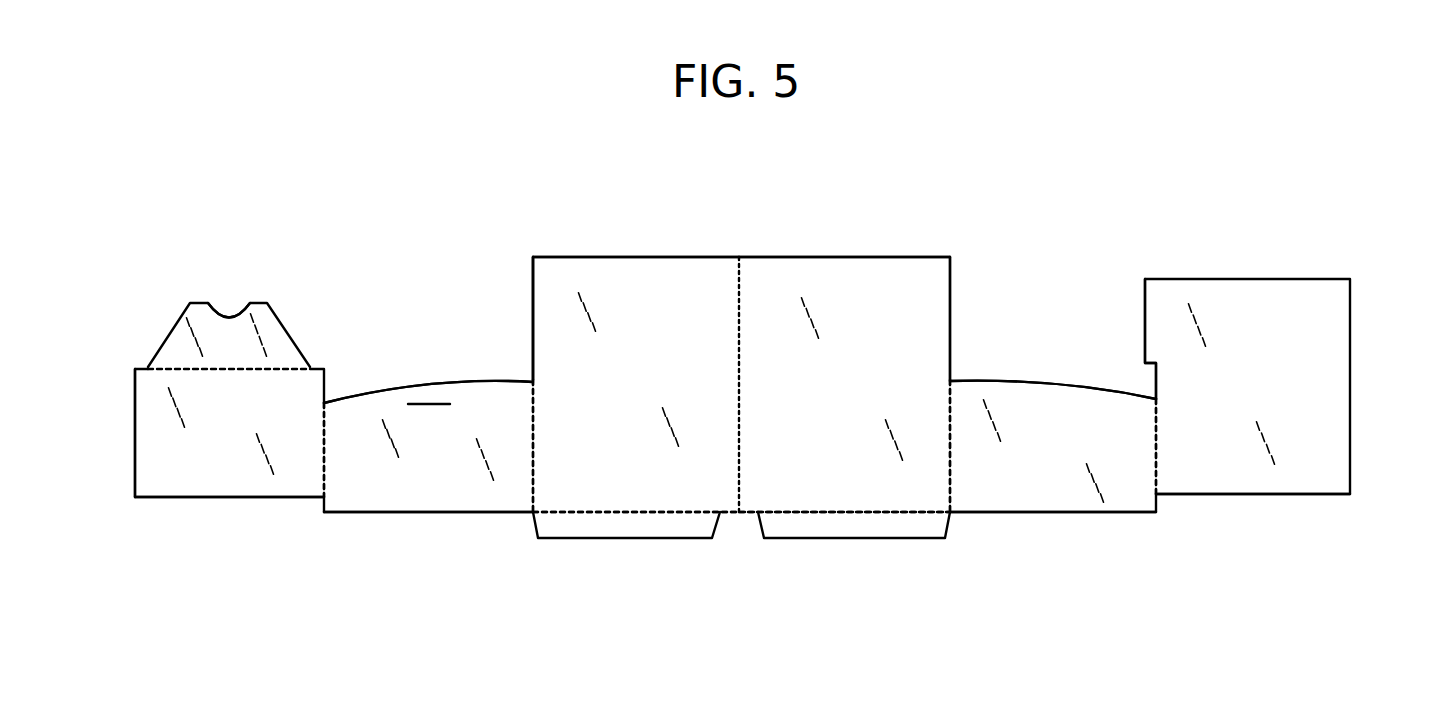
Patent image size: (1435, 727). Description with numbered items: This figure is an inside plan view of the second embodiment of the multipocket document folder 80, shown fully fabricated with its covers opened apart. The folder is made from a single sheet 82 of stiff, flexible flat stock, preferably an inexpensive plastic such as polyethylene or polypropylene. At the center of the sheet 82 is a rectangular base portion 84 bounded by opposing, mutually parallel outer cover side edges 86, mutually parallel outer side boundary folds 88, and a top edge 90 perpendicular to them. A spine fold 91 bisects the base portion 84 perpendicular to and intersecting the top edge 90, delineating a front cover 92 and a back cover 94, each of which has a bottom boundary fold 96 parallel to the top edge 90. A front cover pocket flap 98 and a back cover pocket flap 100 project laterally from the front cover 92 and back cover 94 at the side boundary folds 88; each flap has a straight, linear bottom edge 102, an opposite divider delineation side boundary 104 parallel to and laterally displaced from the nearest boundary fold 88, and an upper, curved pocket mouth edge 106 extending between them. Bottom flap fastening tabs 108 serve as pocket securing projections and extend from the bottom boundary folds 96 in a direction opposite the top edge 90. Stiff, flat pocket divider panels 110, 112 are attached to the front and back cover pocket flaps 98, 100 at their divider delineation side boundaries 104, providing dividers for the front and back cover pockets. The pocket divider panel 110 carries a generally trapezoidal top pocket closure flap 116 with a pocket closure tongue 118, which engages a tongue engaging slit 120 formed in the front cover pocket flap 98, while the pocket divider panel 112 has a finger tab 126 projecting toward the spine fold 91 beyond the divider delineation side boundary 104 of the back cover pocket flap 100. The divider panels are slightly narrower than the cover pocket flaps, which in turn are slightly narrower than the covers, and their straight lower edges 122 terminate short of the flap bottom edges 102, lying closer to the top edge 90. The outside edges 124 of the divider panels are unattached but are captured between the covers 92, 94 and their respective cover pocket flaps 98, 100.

The multipocket document folder 80 is at (915, 197).
The sheet 82 is at (970, 258).
The rectangular base portion 84 is at (533, 320).
The outer cover side edges 86 is at (533, 345).
The outer side boundary folds 88 is at (528, 435).
The top edge 90 is at (699, 257).
The spine fold 91 is at (742, 418).
The front cover 92 is at (645, 377).
The back cover 94 is at (872, 363).
The bottom boundary fold 96 is at (595, 512).
The front cover pocket flap 98 is at (395, 485).
The back cover pocket flap 100 is at (1023, 499).
The bottom edge 102 is at (447, 515).
The divider delineation side boundary 104 is at (325, 453).
The curved pocket mouth edge 106 is at (412, 383).
The bottom flap fastening tabs 108 is at (643, 523).
The pocket divider panel 110 is at (225, 457).
The pocket divider panel 112 is at (1248, 410).
The top pocket closure flap 116 is at (268, 335).
The pocket closure tongue 118 is at (231, 312).
The tongue engaging slit 120 is at (434, 406).
The lower edges 122 is at (223, 498).
The outside edges 124 is at (135, 429).
The finger tab 126 is at (1148, 310).